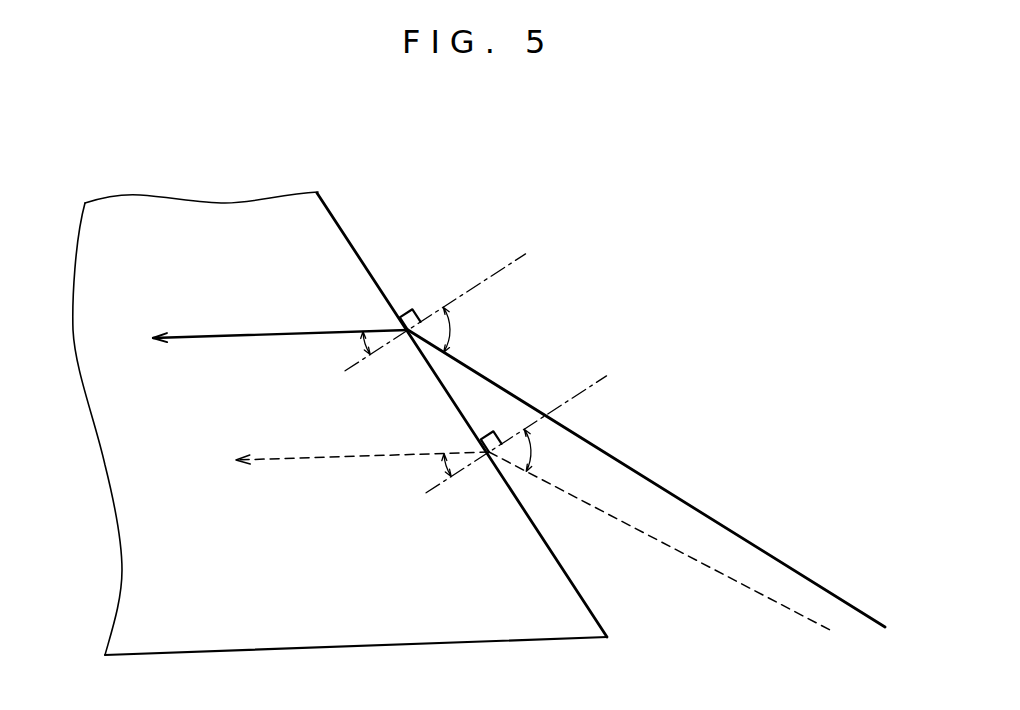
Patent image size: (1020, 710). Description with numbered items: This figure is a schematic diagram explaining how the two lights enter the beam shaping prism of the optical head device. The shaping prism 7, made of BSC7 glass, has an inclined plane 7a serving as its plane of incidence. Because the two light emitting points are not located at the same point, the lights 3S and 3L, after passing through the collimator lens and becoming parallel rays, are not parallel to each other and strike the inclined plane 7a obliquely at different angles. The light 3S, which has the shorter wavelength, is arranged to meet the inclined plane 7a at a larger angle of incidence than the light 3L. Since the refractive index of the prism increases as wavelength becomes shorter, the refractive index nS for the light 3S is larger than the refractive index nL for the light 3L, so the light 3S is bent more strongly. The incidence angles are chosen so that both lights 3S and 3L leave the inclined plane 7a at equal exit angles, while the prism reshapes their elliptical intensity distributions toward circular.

The shaping prism 7 is at (318, 220).
The inclined plane 7a is at (362, 261).
The light 3S is at (243, 338).
The light 3L is at (323, 458).
The refractive index nS is at (435, 312).
The refractive index nL is at (516, 441).